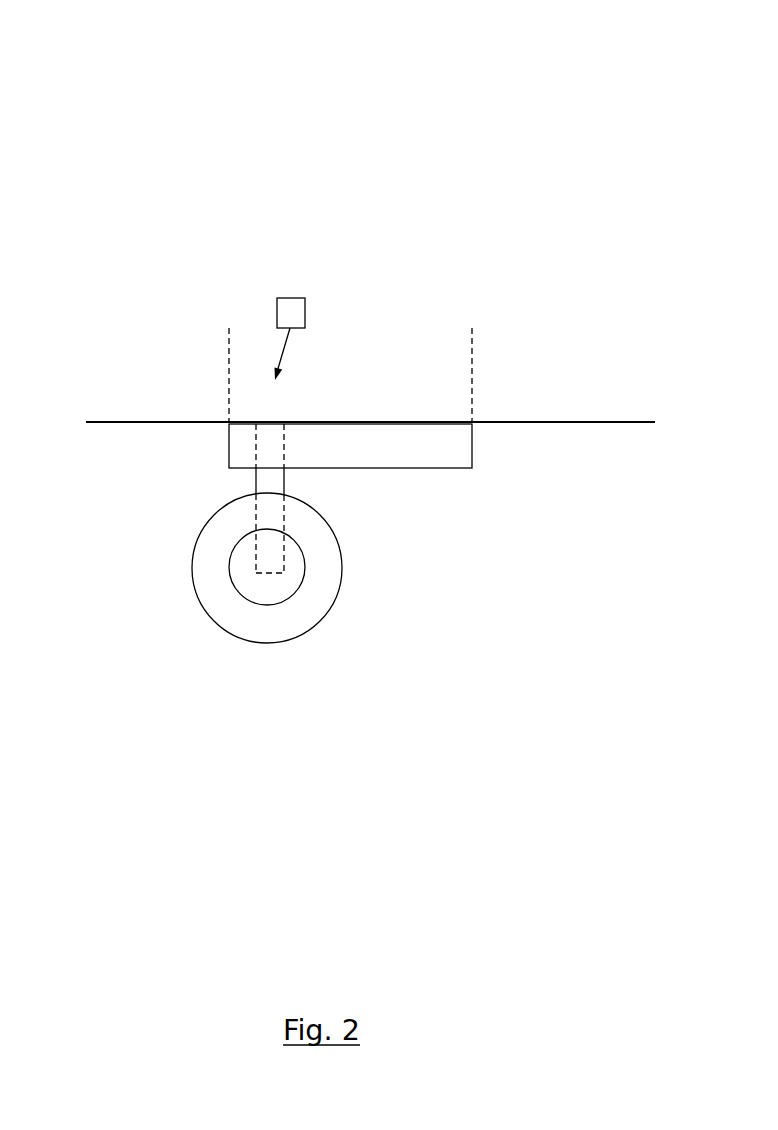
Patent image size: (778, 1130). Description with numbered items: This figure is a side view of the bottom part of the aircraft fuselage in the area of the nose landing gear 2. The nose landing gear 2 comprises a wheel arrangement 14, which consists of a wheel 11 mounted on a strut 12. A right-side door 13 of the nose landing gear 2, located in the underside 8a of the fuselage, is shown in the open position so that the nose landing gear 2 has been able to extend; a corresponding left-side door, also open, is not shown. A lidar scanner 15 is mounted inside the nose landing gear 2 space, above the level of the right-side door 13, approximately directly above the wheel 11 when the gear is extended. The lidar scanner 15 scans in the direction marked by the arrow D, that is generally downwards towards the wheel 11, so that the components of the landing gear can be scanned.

The nose landing gear 2 is at (549, 123).
The underside of the fuselage 8a is at (608, 423).
The wheel 11 is at (314, 598).
The strut 12 is at (270, 483).
The right-side door 13 is at (417, 457).
The wheel arrangement 14 is at (178, 605).
The lidar scanner 15 is at (292, 313).